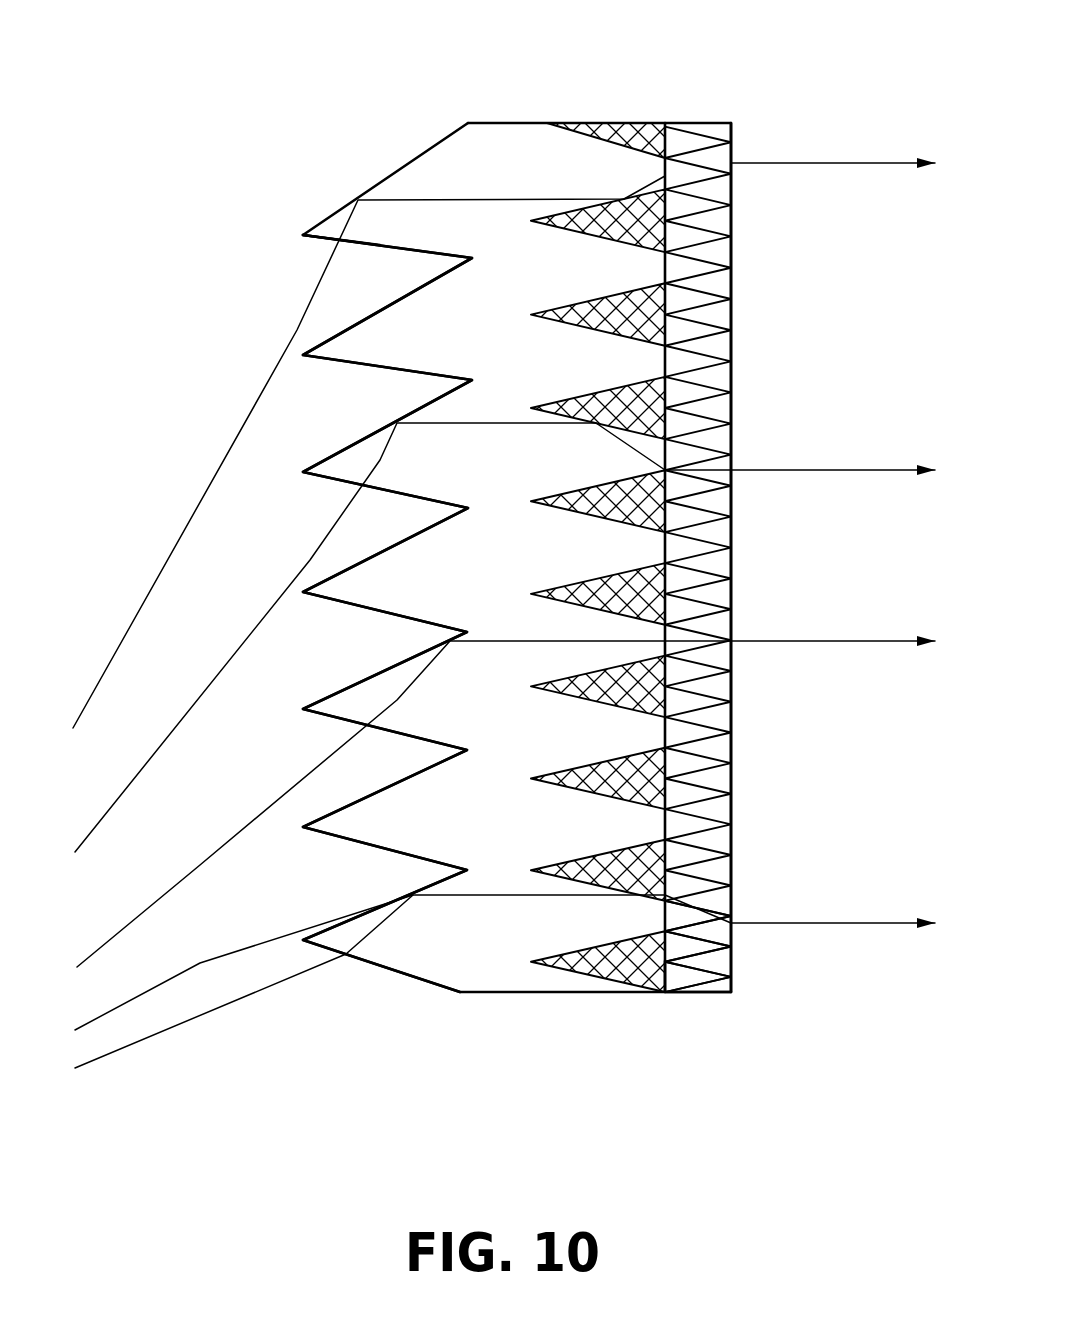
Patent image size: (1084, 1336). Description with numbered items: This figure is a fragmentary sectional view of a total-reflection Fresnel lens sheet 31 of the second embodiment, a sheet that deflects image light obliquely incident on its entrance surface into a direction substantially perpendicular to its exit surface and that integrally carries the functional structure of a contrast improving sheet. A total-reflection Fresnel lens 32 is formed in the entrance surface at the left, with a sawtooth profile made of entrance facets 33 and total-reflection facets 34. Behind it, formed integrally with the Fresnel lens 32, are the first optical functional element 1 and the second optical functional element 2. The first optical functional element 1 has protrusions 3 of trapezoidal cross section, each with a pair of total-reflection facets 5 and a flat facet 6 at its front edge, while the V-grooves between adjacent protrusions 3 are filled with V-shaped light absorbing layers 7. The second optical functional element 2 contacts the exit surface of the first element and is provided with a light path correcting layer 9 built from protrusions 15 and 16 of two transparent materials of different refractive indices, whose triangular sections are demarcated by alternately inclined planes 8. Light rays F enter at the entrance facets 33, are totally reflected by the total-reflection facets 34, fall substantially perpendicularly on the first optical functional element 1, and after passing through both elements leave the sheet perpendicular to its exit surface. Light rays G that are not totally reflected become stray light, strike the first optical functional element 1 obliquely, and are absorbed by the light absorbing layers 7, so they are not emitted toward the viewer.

The first optical functional element 1 is at (484, 558).
The second optical functional element 2 is at (670, 562).
The light path correcting layer 9 is at (670, 562).
The protrusion 3 is at (607, 827).
The total-reflection facet 5 is at (303, 938).
The flat facet 6 is at (673, 922).
The light absorbing layer 7 is at (607, 973).
The inclined plane 8 is at (700, 943).
The protrusion 15 is at (720, 963).
The protrusion 16 is at (685, 980).
The total-reflection Fresnel lens sheet 31 is at (504, 569).
The total-reflection Fresnel lens 32 is at (351, 525).
The entrance facet 33 is at (303, 240).
The total-reflection facet 34 is at (323, 213).
The light rays F is at (113, 657).
The light rays G is at (176, 977).